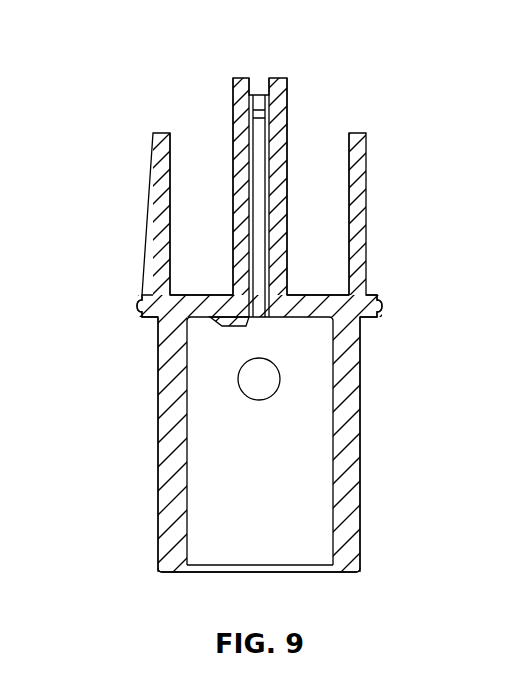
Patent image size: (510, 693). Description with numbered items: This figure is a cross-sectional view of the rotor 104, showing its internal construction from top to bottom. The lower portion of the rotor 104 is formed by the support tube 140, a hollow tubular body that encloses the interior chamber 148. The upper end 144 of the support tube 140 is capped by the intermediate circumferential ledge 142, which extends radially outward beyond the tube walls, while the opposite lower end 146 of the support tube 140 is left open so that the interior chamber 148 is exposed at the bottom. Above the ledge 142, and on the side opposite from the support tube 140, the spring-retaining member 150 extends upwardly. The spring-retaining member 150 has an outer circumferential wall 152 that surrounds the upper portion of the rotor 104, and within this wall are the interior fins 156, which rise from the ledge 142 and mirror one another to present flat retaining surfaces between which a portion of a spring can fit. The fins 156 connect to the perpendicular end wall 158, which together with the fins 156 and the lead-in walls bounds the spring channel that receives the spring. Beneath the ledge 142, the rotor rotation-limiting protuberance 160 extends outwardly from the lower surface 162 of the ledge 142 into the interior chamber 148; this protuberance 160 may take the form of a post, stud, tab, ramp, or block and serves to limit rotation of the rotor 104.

The rotor 104 is at (130, 100).
The support tube 140 is at (363, 443).
The intermediate circumferential ledge 142 is at (297, 305).
The upper end 144 is at (362, 333).
The lower end 146 is at (363, 552).
The interior chamber 148 is at (228, 545).
The spring-retaining member 150 is at (367, 207).
The outer circumferential wall 152 is at (367, 243).
The interior fins 156 is at (240, 78).
The perpendicular end wall 158 is at (260, 95).
The rotor rotation-limiting protuberance 160 is at (237, 326).
The lower surface 162 is at (277, 317).